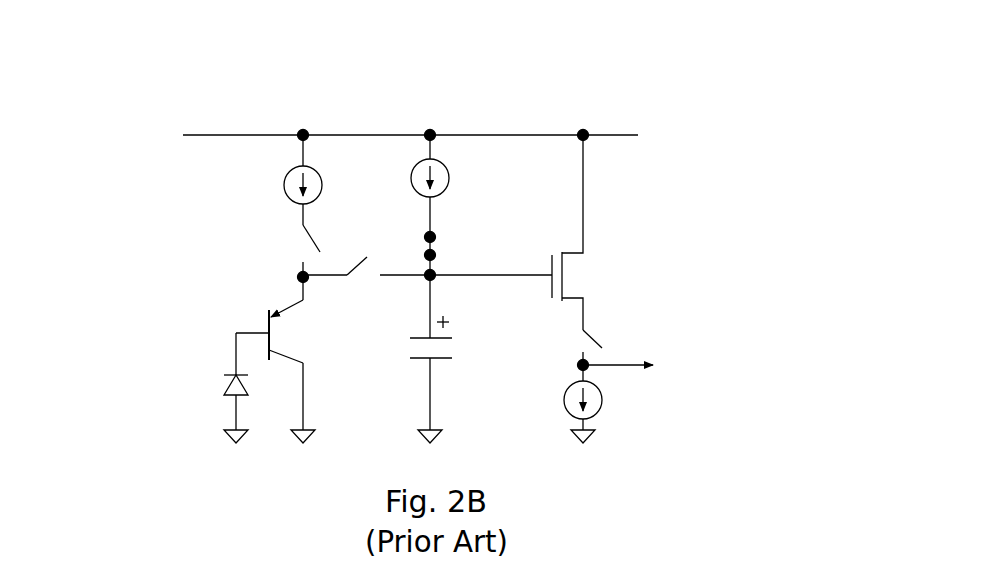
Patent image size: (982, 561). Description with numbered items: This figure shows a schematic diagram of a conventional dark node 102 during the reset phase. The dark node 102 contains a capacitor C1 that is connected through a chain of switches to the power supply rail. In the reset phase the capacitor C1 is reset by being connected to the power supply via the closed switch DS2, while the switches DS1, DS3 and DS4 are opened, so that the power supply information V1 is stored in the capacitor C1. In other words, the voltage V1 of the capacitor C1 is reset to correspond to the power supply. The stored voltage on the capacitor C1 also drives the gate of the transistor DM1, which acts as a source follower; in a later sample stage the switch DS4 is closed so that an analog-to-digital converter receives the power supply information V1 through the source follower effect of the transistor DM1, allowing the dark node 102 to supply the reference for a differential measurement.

The dark node 102 is at (697, 100).
The switch DS1 is at (292, 243).
The switch DS2 is at (439, 240).
The switch DS3 is at (368, 279).
The switch DS4 is at (598, 337).
The transistor DM1 is at (593, 279).
The capacitor C1 is at (447, 361).
The power supply information V1 is at (422, 314).